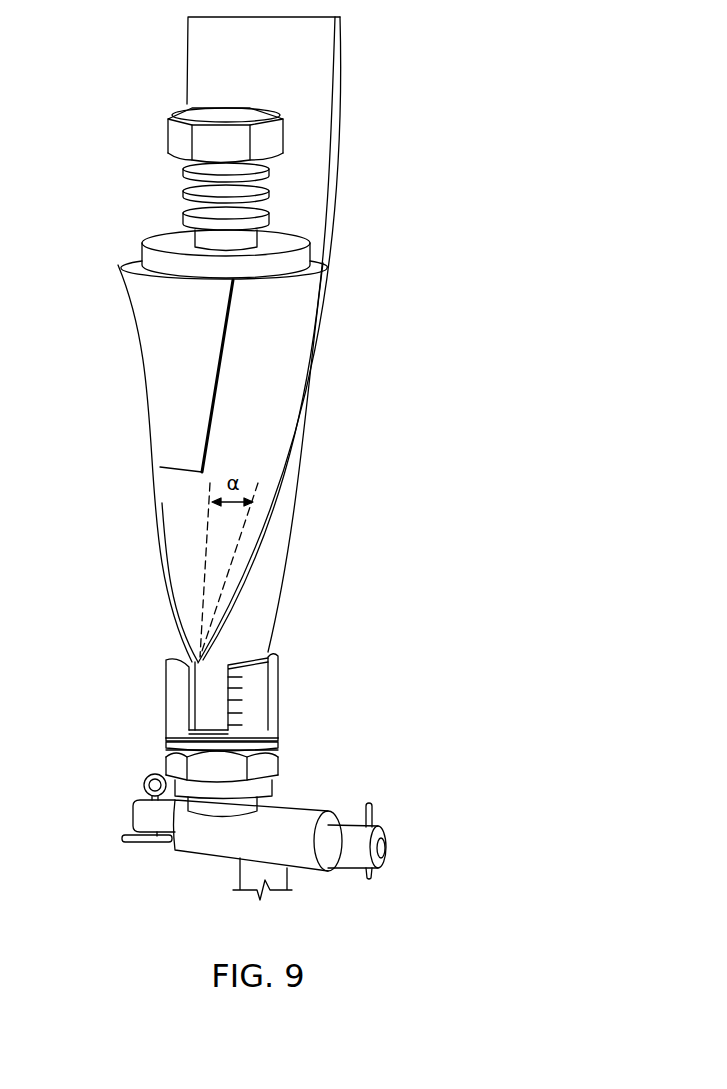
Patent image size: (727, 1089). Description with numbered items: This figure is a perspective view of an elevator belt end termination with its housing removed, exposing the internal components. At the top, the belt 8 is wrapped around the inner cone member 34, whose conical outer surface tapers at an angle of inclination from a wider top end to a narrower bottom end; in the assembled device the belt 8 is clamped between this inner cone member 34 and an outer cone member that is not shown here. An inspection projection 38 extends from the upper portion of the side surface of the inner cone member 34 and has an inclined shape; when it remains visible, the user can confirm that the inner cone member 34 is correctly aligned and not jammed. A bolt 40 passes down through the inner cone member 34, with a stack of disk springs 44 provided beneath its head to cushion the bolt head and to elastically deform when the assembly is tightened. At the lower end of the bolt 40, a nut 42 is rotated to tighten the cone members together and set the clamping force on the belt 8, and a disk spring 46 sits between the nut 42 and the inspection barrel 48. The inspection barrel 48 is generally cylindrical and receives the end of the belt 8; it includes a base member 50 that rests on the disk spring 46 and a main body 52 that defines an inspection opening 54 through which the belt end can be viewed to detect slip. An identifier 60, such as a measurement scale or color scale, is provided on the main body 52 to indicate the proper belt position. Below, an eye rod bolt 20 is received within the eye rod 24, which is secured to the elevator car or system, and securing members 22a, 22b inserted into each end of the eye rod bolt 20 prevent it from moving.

The belt 8 is at (307, 55).
The eye rod bolt 20 is at (385, 848).
The securing member 22a is at (133, 843).
The securing member 22b is at (373, 808).
The eye rod 24 is at (298, 848).
The inner cone member 34 is at (277, 385).
The inspection projection 38 is at (163, 335).
The bolt 40 is at (182, 137).
The nut 42 is at (175, 755).
The disk spring 44 is at (247, 200).
The disk spring 46 is at (180, 743).
The inspection barrel 48 is at (255, 718).
The base member 50 is at (267, 735).
The main body 52 is at (280, 673).
The inspection opening 54 is at (210, 707).
The identifier 60 is at (252, 688).